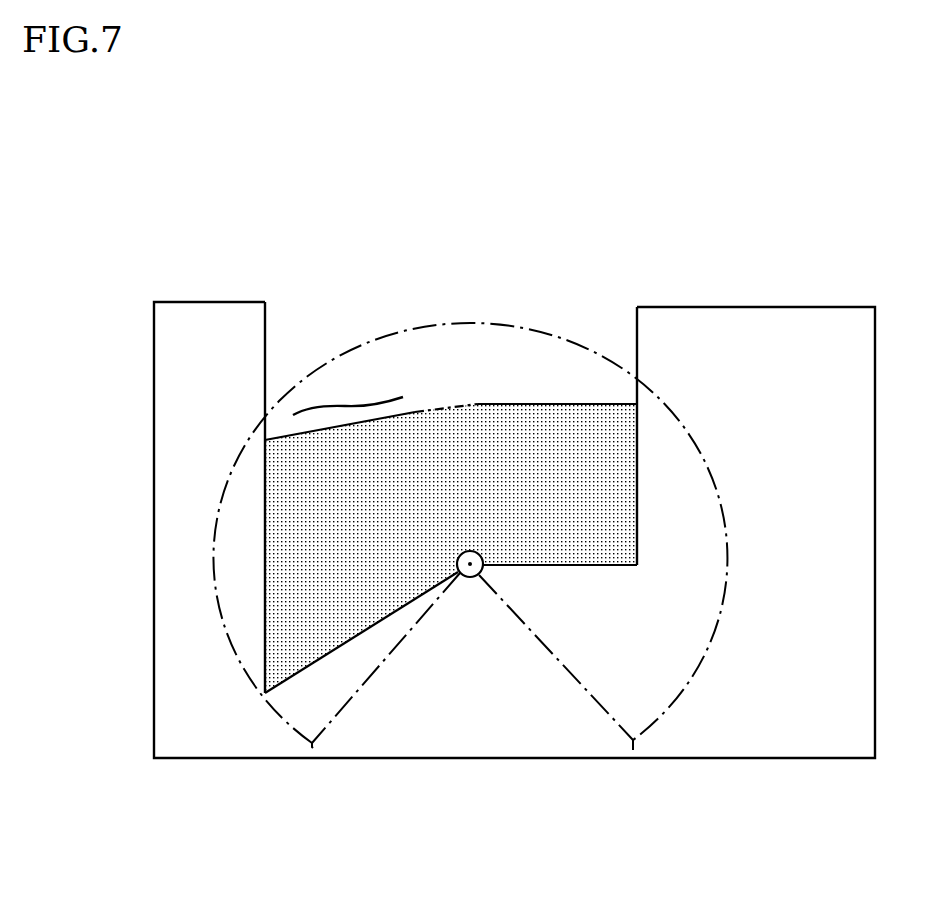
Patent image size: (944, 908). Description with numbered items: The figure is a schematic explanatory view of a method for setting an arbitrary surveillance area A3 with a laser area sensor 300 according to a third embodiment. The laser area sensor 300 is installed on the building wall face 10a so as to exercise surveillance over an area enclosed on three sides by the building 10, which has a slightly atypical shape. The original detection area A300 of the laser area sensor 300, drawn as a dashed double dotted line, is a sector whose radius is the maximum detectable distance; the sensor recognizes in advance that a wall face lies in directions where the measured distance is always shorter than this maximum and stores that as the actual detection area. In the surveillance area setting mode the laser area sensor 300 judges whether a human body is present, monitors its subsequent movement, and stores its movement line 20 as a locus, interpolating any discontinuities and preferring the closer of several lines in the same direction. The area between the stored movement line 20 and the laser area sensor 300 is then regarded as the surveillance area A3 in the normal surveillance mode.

The building 10 is at (769, 332).
The building wall face 10a is at (637, 338).
The movement line 20 is at (365, 405).
The laser area sensor 300 is at (470, 578).
The surveillance area A3 is at (545, 440).
The original detection area A300 is at (410, 323).